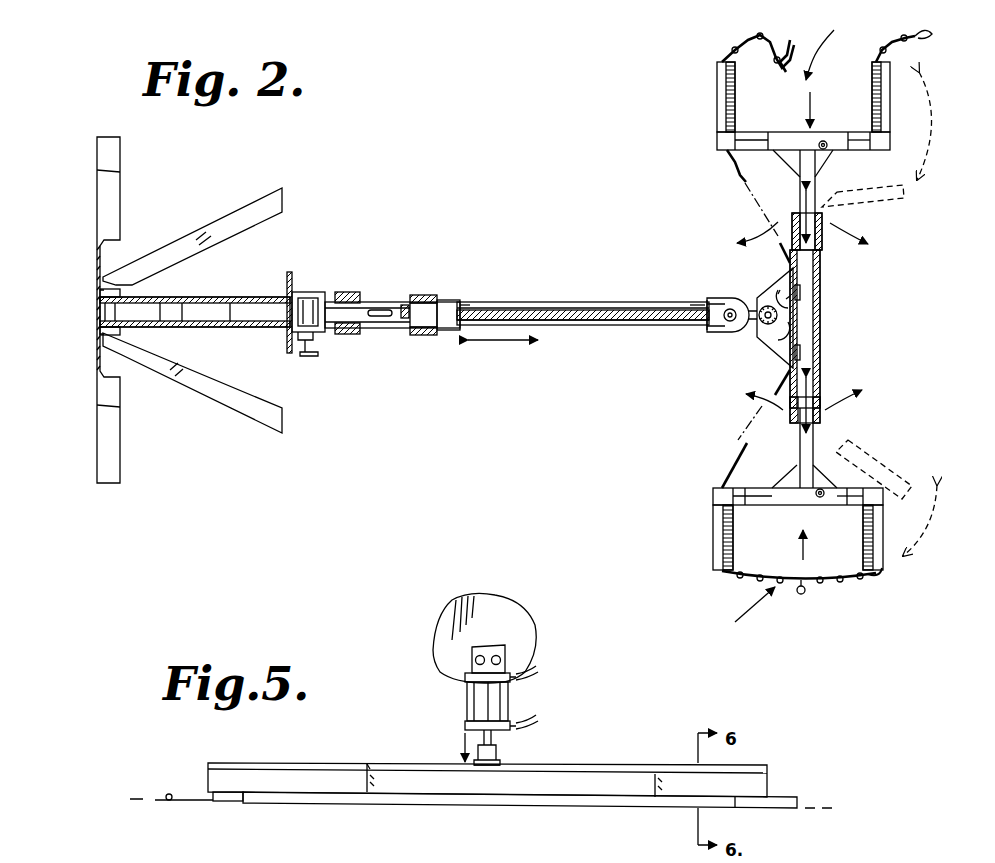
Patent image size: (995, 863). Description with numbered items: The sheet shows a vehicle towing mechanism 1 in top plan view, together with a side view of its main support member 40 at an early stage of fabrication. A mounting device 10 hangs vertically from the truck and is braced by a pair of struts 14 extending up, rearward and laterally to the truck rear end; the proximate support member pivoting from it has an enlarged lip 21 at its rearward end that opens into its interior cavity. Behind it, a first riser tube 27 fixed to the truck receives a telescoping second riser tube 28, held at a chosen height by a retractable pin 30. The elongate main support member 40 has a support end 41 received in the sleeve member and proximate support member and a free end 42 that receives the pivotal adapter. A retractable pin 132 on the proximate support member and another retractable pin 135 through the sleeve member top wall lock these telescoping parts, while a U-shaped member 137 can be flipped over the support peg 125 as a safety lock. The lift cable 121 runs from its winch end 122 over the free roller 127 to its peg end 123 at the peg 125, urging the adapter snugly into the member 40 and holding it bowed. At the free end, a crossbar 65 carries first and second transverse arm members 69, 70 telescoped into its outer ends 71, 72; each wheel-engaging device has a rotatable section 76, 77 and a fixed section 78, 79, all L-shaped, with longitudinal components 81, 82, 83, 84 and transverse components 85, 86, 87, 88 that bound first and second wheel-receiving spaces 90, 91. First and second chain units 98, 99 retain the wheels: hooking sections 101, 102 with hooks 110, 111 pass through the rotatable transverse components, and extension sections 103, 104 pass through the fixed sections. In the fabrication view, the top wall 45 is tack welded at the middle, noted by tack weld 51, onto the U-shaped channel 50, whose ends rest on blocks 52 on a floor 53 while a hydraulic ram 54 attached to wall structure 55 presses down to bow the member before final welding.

In FIG. 2, the vehicle towing mechanism 1 is at (488, 362).
In FIG. 2, the mounting device 10 is at (92, 298).
In FIG. 2, the struts 14 is at (218, 222).
In FIG. 2, the enlarged lip 21 is at (362, 296).
In FIG. 2, the first riser tube 27 is at (300, 292).
In FIG. 2, the second riser tube 28 is at (325, 295).
In FIG. 2, the retractable pin 30 is at (312, 354).
In FIG. 2, the main support member 40 is at (562, 305).
In FIG. 5, the main support member 40 is at (272, 778).
In FIG. 2, the support end 41 is at (198, 297).
In FIG. 2, the free end 42 is at (687, 302).
In FIG. 5, the top wall 45 is at (360, 768).
In FIG. 5, the U-shaped channel 50 is at (330, 800).
In FIG. 5, the tack weld 51 is at (486, 772).
In FIG. 5, the blocks 52 is at (226, 801).
In FIG. 5, the floor 53 is at (166, 800).
In FIG. 5, the hydraulic ram 54 is at (516, 706).
In FIG. 5, the wall structure 55 is at (438, 618).
In FIG. 2, the crossbar 65 is at (821, 332).
In FIG. 2, the first transverse arm member 69 is at (797, 445).
In FIG. 2, the second transverse arm member 70 is at (797, 168).
In FIG. 2, the first outer end of crossbar 71 is at (822, 388).
In FIG. 2, the second outer end of crossbar 72 is at (823, 240).
In FIG. 2, the first rotatable section 76 is at (885, 492).
In FIG. 2, the second rotatable section 77 is at (893, 143).
In FIG. 2, the first fixed section 78 is at (712, 499).
In FIG. 2, the second fixed section 79 is at (715, 140).
In FIG. 2, the longitudinal component of first rotatable section 81 is at (850, 506).
In FIG. 2, the longitudinal component of second rotatable section 82 is at (857, 150).
In FIG. 2, the longitudinal component of first fixed section 83 is at (766, 505).
In FIG. 2, the longitudinal component of second fixed section 84 is at (750, 150).
In FIG. 2, the transverse component of first rotatable section 85 is at (885, 541).
In FIG. 2, the transverse component of second rotatable section 86 is at (890, 116).
In FIG. 2, the transverse component of first fixed section 87 is at (712, 545).
In FIG. 2, the transverse component of second fixed section 88 is at (717, 82).
In FIG. 2, the first wheel-receiving space 90 is at (807, 560).
In FIG. 2, the second wheel-receiving space 91 is at (823, 73).
In FIG. 2, the first chain unit 98 is at (745, 612).
In FIG. 2, the second chain unit 99 is at (735, 38).
In FIG. 2, the first hooking section 101 is at (874, 579).
In FIG. 2, the second hooking section 102 is at (875, 61).
In FIG. 2, the first extension section 103 is at (725, 578).
In FIG. 2, the second extension section 104 is at (783, 74).
In FIG. 2, the first hook 110 is at (793, 586).
In FIG. 2, the second hook 111 is at (922, 38).
In FIG. 2, the lift mechanism support cable 121 is at (470, 304).
In FIG. 2, the winch end of cable 122 is at (405, 303).
In FIG. 2, the peg end of cable 123 is at (700, 301).
In FIG. 2, the support peg 125 is at (731, 322).
In FIG. 2, the free roller 127 is at (424, 330).
In FIG. 2, the retractable pin 132 is at (92, 156).
In FIG. 2, the retractable pin 135 is at (385, 318).
In FIG. 2, the U-shaped member 137 is at (706, 331).